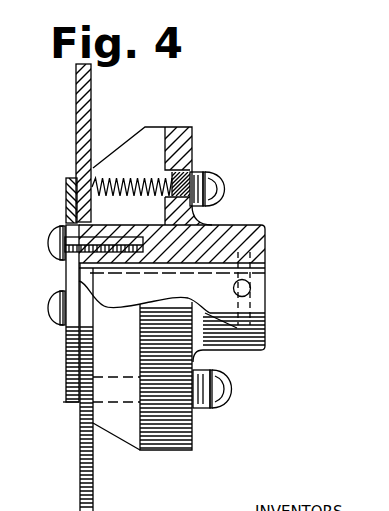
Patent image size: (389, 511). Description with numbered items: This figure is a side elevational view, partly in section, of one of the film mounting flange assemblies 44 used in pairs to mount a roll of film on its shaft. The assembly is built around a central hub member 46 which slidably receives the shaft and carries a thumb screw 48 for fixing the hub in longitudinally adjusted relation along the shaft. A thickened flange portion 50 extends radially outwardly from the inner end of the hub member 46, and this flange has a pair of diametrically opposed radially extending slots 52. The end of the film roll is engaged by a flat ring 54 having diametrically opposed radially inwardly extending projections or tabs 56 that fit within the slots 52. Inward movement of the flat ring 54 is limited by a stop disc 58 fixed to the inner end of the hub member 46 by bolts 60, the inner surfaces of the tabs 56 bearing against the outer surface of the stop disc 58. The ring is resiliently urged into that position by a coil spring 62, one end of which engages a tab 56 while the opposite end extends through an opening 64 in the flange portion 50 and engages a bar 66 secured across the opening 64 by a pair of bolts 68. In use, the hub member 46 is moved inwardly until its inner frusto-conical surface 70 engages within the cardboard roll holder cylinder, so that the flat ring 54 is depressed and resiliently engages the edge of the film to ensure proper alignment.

The film mounting flange assembly 44 is at (68, 420).
The central hub member 46 is at (246, 224).
The thumb screw 48 is at (251, 288).
The thickened flange portion 50 is at (193, 138).
The radially extending slot 52 is at (167, 138).
The flat ring 54 is at (76, 87).
The projection or tab 56 is at (66, 194).
The stop disc 58 is at (67, 346).
The bolt 60 is at (50, 233).
The coil spring 62 is at (115, 177).
The opening 64 is at (188, 168).
The bar 66 is at (218, 176).
The bolt 68 is at (225, 191).
The inner frusto-conical surface 70 is at (114, 446).